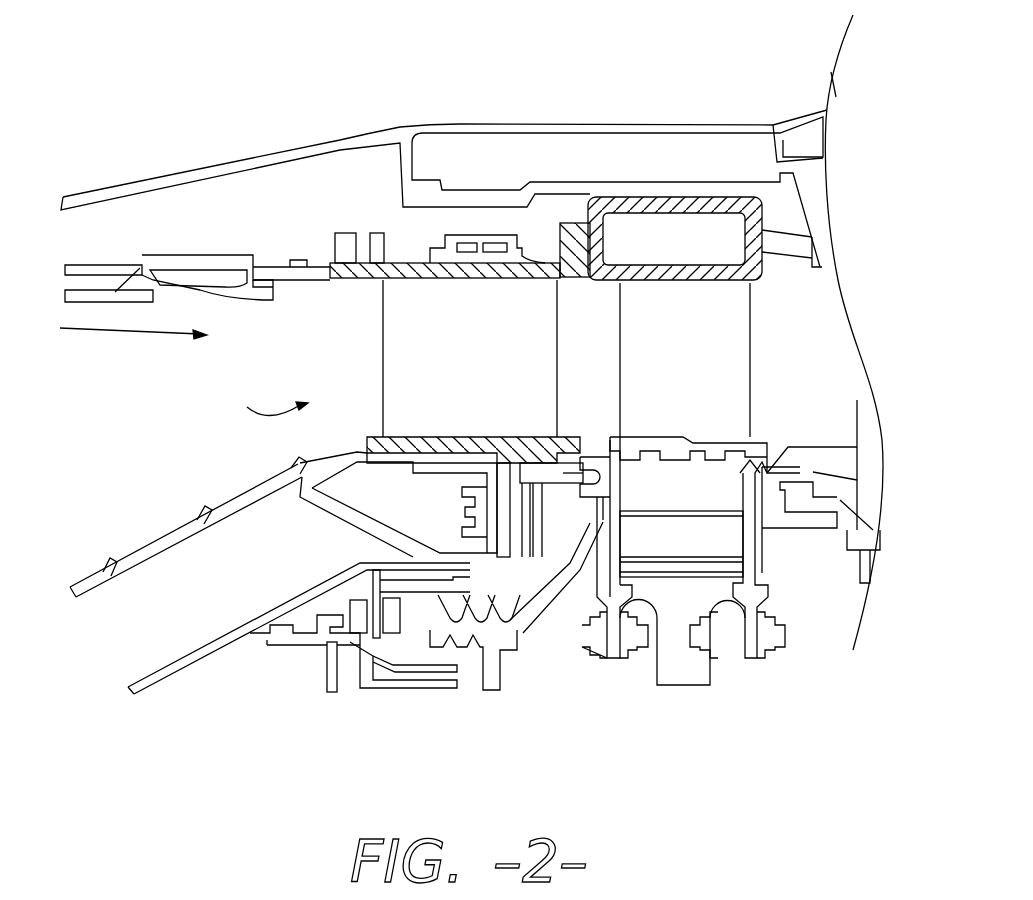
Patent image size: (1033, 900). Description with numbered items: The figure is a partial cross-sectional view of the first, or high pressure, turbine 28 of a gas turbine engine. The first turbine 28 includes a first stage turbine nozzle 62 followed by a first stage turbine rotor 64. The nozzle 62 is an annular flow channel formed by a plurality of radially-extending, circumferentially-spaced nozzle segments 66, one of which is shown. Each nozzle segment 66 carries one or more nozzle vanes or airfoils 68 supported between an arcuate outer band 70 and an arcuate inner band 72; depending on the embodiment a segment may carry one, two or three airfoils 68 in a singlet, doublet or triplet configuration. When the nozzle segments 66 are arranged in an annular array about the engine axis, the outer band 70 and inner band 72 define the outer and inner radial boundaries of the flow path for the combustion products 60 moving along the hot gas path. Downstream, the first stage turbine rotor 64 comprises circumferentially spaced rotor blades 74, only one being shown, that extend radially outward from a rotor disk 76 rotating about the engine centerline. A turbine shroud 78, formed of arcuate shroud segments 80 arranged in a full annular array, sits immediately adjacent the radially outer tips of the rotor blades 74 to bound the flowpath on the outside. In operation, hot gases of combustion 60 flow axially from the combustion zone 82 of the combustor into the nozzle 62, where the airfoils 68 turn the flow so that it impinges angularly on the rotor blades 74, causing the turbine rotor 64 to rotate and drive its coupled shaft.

The first turbine 28 is at (595, 97).
The combustion products 60 is at (117, 332).
The first stage turbine nozzle 62 is at (256, 396).
The first stage turbine rotor 64 is at (760, 680).
The nozzle segment 66 is at (410, 250).
The nozzle vane or airfoil 68 is at (490, 373).
The arcuate outer band 70 is at (360, 283).
The arcuate inner band 72 is at (397, 463).
The rotor blade 74 is at (705, 385).
The rotor disk 76 is at (678, 677).
The turbine shroud 78 is at (583, 208).
The shroud segment 80 is at (660, 273).
The combustion zone 82 is at (140, 490).